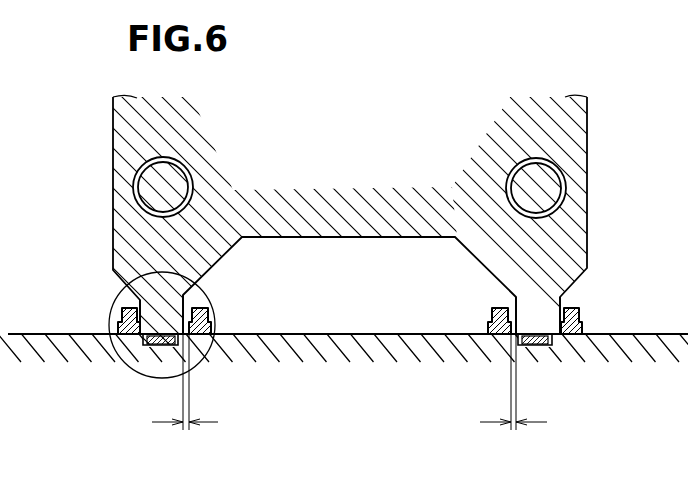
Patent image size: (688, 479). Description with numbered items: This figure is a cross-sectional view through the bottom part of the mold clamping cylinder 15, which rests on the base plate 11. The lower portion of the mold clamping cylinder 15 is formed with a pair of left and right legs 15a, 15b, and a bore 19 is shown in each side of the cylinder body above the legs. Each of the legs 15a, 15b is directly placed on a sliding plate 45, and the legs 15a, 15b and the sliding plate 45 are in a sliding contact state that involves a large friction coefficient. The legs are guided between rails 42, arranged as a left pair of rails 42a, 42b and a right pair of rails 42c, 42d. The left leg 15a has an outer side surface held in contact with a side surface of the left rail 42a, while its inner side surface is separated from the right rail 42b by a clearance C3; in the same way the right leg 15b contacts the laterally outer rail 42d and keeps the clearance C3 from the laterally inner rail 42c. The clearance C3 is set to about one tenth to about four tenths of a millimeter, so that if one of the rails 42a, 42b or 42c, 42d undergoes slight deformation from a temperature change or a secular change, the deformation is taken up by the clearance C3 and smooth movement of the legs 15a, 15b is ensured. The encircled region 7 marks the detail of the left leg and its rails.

The mold clamping cylinder 15 is at (350, 141).
The pin / shaft bore 19 is at (160, 186).
The base plate 11 is at (340, 334).
The left leg 15a is at (163, 317).
The right leg 15b is at (533, 317).
The rails 42 is at (352, 355).
The left rail 42a is at (125, 340).
The right rail 42b is at (204, 338).
The rail 42c is at (498, 337).
The rail 42d is at (583, 337).
The sliding plate 45 is at (167, 345).
The detail region 7 is at (135, 371).
The clearance C3 is at (349, 394).